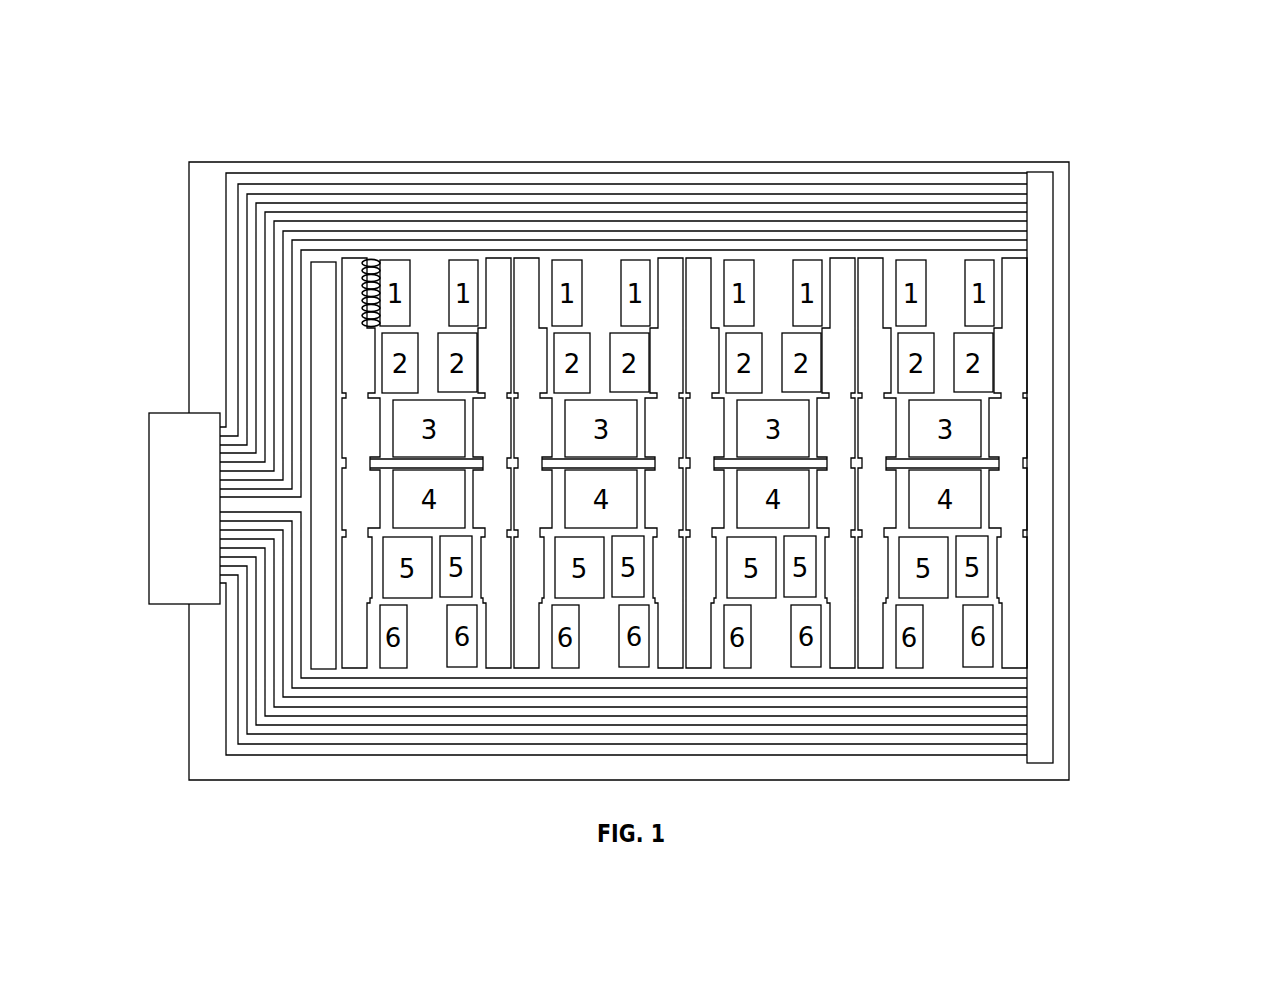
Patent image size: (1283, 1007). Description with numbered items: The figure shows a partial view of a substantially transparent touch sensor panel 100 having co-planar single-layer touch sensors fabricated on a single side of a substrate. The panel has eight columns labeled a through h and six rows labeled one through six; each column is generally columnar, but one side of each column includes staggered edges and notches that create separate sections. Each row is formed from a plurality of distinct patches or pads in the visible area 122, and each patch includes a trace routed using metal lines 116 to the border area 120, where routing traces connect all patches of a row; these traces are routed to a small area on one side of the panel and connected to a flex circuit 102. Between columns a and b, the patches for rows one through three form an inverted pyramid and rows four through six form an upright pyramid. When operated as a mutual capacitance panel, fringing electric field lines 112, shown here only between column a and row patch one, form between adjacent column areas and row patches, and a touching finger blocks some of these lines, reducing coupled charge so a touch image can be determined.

The touch sensor panel 100 is at (657, 134).
The flex circuit 102 is at (178, 606).
The electric field lines 112 is at (375, 260).
The metal lines 116 is at (332, 250).
The border area 120 is at (1077, 172).
The visible area 122 is at (1077, 255).